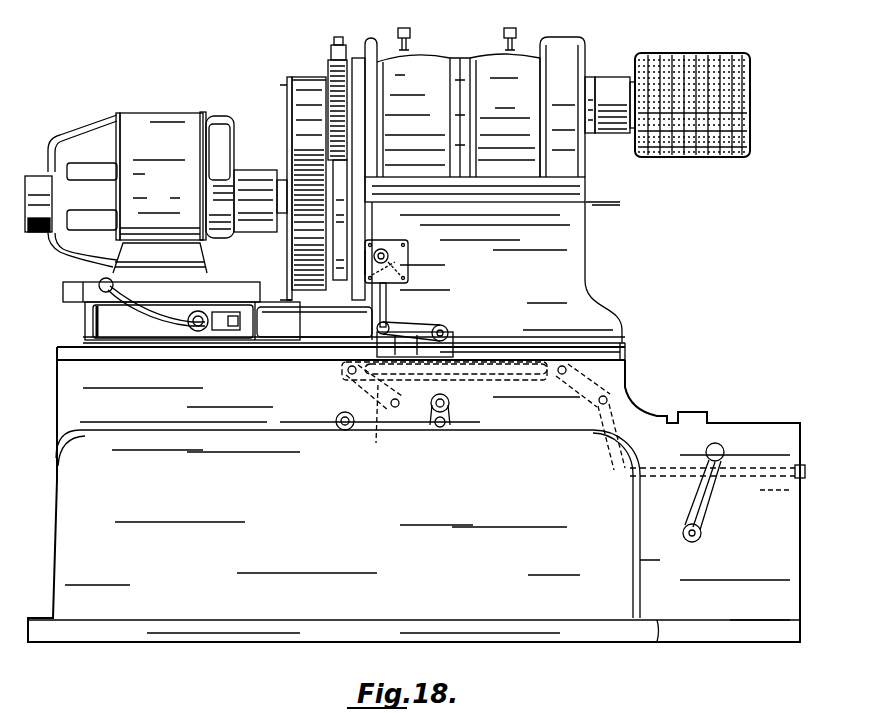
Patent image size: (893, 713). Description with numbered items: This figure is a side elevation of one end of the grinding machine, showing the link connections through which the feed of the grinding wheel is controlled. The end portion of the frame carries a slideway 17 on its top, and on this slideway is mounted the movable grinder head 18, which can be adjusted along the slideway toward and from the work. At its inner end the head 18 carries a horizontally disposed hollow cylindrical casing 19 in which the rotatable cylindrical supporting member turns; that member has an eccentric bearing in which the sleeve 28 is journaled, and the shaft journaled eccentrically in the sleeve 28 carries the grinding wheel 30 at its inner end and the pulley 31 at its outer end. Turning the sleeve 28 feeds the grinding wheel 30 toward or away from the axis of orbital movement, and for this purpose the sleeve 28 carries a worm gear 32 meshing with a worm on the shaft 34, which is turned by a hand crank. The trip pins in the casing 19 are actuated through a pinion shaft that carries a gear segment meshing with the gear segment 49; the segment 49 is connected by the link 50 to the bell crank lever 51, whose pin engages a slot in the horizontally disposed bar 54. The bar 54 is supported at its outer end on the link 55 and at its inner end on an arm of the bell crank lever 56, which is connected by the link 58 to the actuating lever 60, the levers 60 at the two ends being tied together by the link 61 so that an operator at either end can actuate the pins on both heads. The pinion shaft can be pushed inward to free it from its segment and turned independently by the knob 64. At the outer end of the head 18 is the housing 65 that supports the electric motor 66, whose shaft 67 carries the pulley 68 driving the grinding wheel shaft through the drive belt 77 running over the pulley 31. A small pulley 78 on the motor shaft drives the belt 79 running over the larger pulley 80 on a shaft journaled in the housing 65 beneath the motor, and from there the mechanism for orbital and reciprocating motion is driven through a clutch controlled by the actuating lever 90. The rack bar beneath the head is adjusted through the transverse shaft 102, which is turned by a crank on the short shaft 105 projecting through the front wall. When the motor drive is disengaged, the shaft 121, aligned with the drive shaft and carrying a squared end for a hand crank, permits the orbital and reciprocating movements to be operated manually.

The slideway 17 is at (72, 352).
The grinder head 18 is at (354, 377).
The cylindrical casing 19 is at (573, 62).
The sleeve 28 is at (607, 80).
The grinding wheel 30 is at (672, 156).
The pulley 31 is at (287, 82).
The worm gear 32 is at (330, 70).
The shaft 34 is at (341, 56).
The gear segment 49 is at (410, 262).
The link 50 is at (395, 292).
The bell crank lever 51 is at (415, 322).
The bar 54 is at (532, 378).
The link 55 is at (373, 428).
The bell crank lever 56 is at (600, 385).
The link 58 is at (636, 490).
The actuating lever 60 is at (697, 520).
The link 61 is at (775, 470).
The knob 64 is at (386, 253).
The housing 65 is at (92, 312).
The electric motor 66 is at (142, 142).
The motor shaft 67 is at (286, 205).
The pulley 68 is at (293, 180).
The drive belt 77 is at (288, 170).
The small pulley 78 is at (278, 175).
The belt 79 is at (283, 280).
The larger pulley 80 is at (330, 348).
The actuating lever 90 is at (167, 322).
The transverse shaft 102 is at (445, 428).
The short shaft 105 is at (441, 430).
The shaft 121 is at (342, 432).